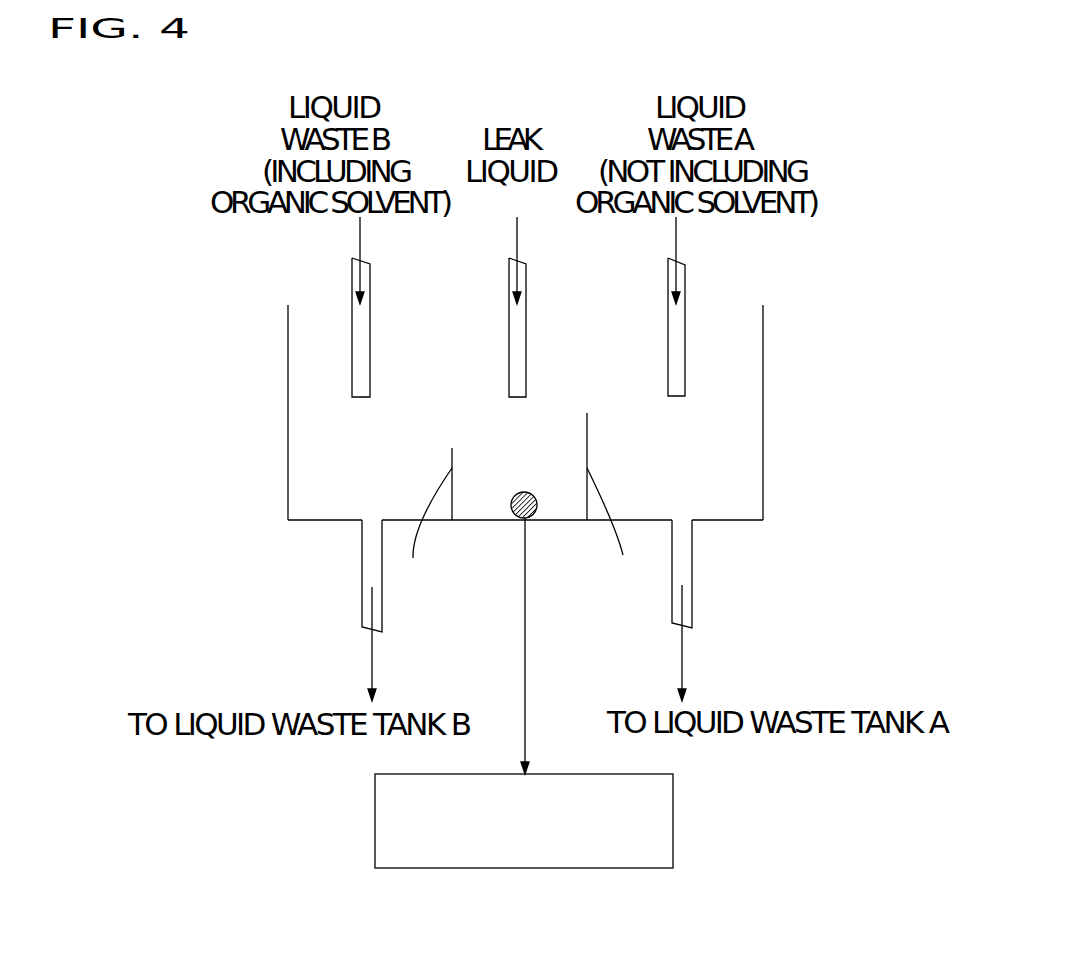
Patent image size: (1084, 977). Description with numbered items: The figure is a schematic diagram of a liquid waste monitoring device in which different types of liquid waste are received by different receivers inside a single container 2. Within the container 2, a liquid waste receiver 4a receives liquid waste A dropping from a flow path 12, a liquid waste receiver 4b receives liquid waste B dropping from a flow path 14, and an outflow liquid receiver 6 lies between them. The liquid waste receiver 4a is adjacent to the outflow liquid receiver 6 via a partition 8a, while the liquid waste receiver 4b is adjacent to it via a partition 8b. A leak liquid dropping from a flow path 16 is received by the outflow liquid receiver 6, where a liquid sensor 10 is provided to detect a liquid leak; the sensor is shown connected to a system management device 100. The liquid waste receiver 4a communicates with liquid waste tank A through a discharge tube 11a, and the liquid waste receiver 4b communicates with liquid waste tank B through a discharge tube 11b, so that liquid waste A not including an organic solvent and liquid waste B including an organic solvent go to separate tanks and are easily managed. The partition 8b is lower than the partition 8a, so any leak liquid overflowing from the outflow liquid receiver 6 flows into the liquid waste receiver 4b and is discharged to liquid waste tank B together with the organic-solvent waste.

The container 2 is at (522, 446).
The liquid waste receiver 4a is at (752, 478).
The liquid waste receiver 4b is at (300, 472).
The outflow liquid receiver 6 is at (552, 507).
The partition 8a is at (614, 505).
The partition 8b is at (421, 522).
The liquid sensor 10 is at (514, 519).
The discharge tube 11a is at (682, 543).
The discharge tube 11b is at (368, 550).
The flow path 12 is at (677, 355).
The flow path 14 is at (360, 337).
The flow path 16 is at (516, 337).
The system management device 100 is at (605, 868).